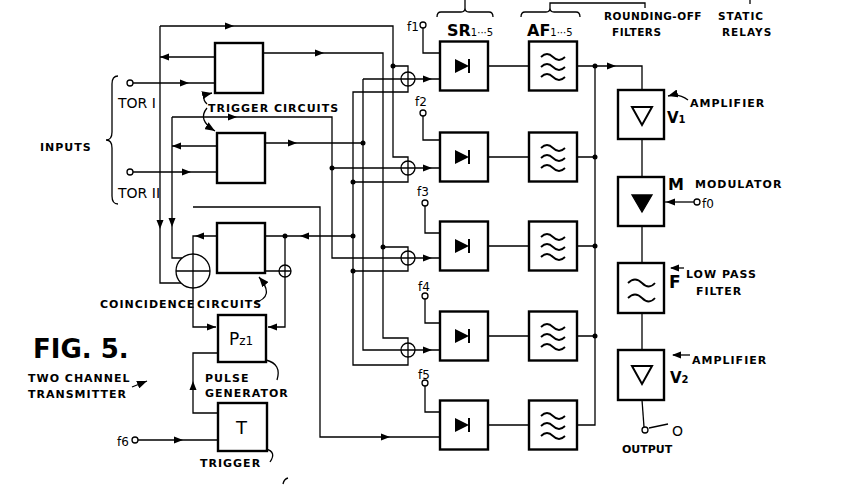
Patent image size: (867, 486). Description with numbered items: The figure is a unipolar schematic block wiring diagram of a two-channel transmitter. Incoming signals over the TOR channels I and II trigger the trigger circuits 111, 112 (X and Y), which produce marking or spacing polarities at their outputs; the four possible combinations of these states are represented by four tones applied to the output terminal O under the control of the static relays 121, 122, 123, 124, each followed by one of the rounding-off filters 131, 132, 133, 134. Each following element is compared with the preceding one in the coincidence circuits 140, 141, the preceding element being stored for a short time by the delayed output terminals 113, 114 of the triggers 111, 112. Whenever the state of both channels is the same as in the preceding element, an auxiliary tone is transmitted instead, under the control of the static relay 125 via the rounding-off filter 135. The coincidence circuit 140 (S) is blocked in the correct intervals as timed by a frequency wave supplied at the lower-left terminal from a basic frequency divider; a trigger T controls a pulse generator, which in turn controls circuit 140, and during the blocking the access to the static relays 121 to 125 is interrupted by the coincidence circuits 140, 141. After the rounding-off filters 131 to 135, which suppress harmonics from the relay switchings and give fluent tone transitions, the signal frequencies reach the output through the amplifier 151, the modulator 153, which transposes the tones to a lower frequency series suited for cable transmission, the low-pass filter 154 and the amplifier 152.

The trigger circuit X 111 is at (263, 88).
The trigger circuit Y 112 is at (265, 180).
The delayed output terminal of trigger 111 113 is at (203, 57).
The delayed output terminal of trigger 112 114 is at (210, 148).
The static relay SR1 121 is at (482, 94).
The static relay SR2 122 is at (482, 184).
The static relay SR3 123 is at (482, 273).
The static relay SR4 124 is at (482, 363).
The static relay SR5 125 is at (482, 452).
The rounding-off filter AF1 131 is at (570, 94).
The rounding-off filter AF2 132 is at (570, 184).
The rounding-off filter AF3 133 is at (553, 256).
The rounding-off filter AF4 134 is at (570, 363).
The rounding-off filter AF5 135 is at (570, 452).
The coincidence circuit S 140 is at (258, 223).
The coincidence circuit 141 is at (209, 277).
The amplifier V1 151 is at (614, 139).
The amplifier V2 152 is at (614, 400).
The modulator M 153 is at (614, 228).
The low-pass filter F 154 is at (614, 314).